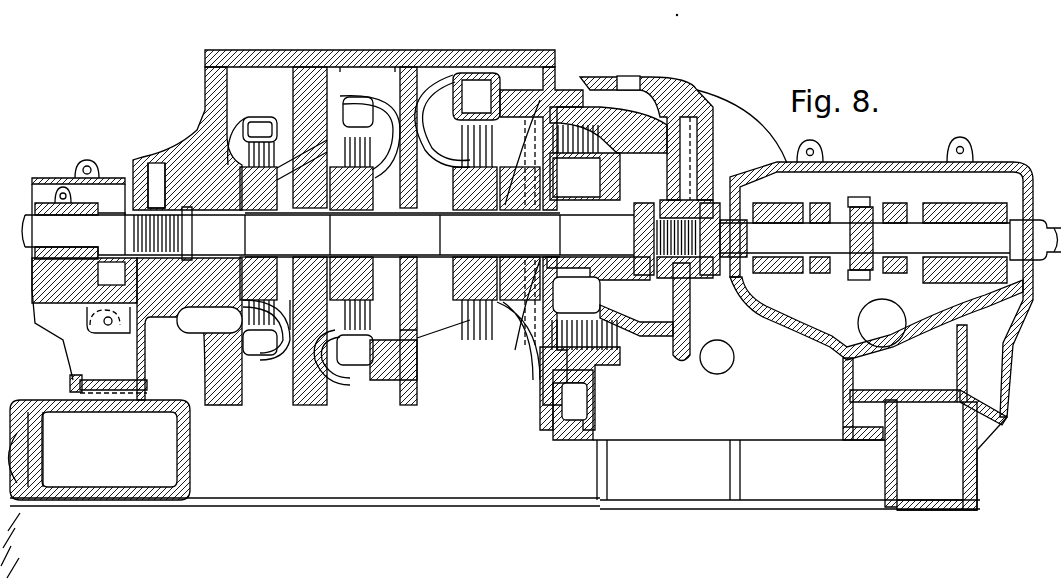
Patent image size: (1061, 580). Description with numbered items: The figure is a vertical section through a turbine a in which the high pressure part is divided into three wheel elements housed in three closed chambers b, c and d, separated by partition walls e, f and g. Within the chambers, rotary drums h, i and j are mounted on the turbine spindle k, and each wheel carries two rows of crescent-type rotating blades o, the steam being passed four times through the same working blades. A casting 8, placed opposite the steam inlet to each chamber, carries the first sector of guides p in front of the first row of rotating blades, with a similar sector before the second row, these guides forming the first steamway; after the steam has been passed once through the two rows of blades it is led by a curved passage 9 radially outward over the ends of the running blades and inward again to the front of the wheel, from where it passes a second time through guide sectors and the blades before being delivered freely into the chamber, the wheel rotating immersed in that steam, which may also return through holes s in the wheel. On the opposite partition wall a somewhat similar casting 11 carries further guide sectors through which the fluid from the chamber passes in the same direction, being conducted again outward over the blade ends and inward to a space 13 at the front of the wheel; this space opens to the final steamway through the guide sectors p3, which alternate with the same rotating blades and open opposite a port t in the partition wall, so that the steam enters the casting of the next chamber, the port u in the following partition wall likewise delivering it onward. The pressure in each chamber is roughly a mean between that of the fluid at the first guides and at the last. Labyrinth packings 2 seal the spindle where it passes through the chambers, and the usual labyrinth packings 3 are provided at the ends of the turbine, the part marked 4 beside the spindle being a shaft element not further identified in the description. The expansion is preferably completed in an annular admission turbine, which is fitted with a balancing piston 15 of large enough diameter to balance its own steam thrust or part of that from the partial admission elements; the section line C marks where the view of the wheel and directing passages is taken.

The chamber b is at (243, 66).
The chamber c is at (388, 66).
The partition wall e is at (303, 66).
The partition wall f is at (410, 75).
The chamber d is at (515, 75).
The space at the front of the wheel 13 is at (215, 130).
The holes s is at (203, 128).
The turbine a is at (135, 330).
The labyrinth packings 3 is at (126, 185).
The shaft 4 is at (208, 200).
The rotary drum h is at (258, 205).
The labyrinth packings 2 is at (402, 234).
The rotary drum i is at (355, 205).
The casting 11 is at (258, 135).
The guide sectors p3 is at (340, 345).
The port t is at (287, 150).
The segments of guide blades p is at (340, 120).
The section line C- C is at (355, 120).
The casting 8 is at (388, 105).
The curved passage 9 is at (380, 160).
The port u is at (420, 359).
The rotating blades o is at (242, 316).
The partition wall g is at (540, 185).
The balancing piston 15 is at (645, 135).
The rotary drum j is at (576, 237).
The turbine spindle k is at (582, 205).